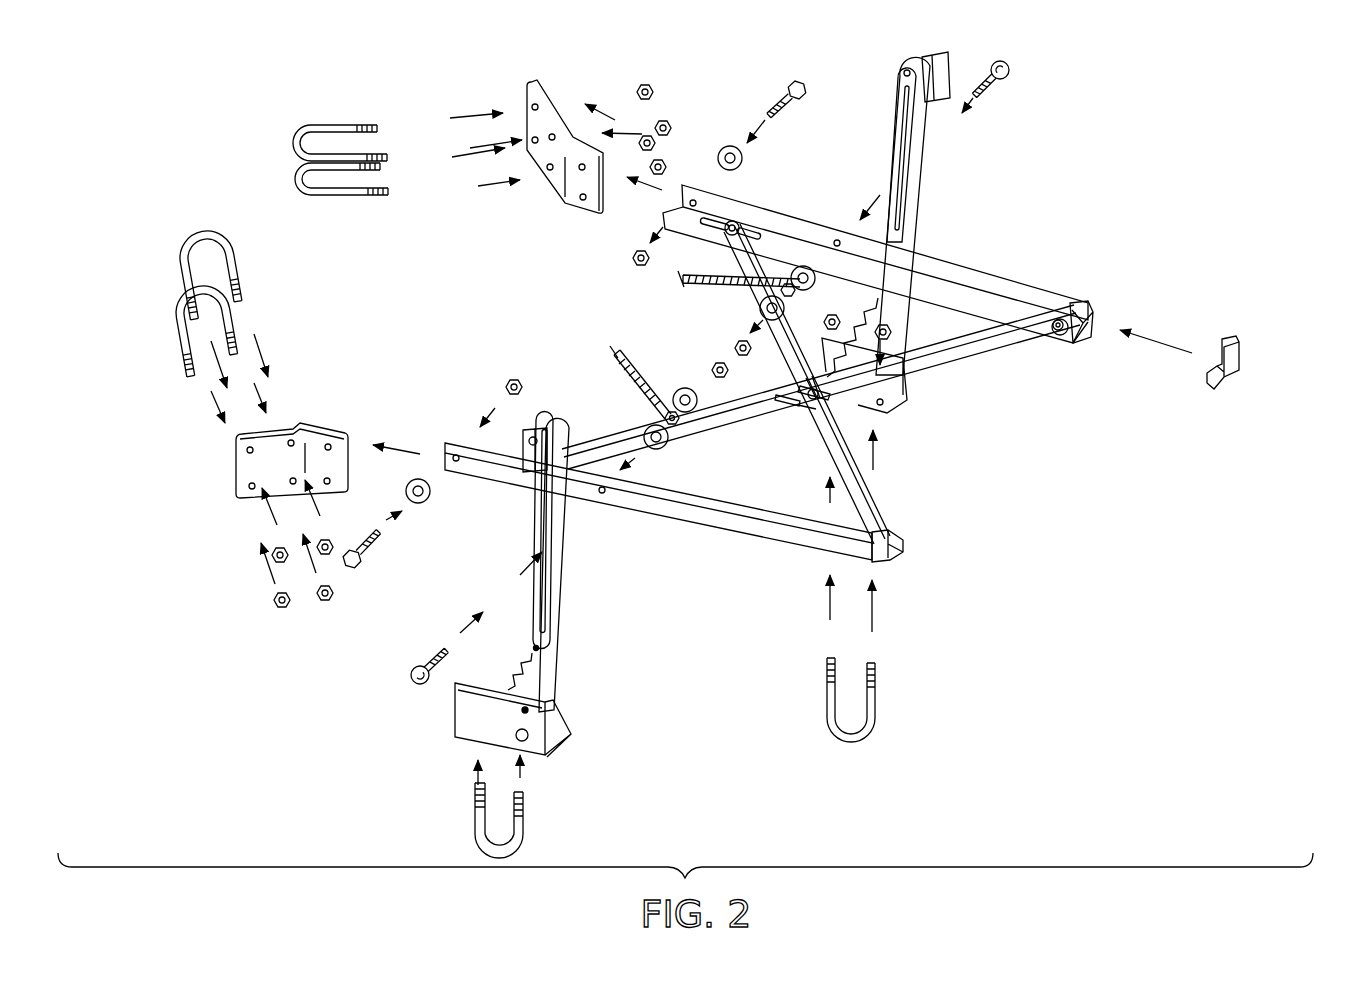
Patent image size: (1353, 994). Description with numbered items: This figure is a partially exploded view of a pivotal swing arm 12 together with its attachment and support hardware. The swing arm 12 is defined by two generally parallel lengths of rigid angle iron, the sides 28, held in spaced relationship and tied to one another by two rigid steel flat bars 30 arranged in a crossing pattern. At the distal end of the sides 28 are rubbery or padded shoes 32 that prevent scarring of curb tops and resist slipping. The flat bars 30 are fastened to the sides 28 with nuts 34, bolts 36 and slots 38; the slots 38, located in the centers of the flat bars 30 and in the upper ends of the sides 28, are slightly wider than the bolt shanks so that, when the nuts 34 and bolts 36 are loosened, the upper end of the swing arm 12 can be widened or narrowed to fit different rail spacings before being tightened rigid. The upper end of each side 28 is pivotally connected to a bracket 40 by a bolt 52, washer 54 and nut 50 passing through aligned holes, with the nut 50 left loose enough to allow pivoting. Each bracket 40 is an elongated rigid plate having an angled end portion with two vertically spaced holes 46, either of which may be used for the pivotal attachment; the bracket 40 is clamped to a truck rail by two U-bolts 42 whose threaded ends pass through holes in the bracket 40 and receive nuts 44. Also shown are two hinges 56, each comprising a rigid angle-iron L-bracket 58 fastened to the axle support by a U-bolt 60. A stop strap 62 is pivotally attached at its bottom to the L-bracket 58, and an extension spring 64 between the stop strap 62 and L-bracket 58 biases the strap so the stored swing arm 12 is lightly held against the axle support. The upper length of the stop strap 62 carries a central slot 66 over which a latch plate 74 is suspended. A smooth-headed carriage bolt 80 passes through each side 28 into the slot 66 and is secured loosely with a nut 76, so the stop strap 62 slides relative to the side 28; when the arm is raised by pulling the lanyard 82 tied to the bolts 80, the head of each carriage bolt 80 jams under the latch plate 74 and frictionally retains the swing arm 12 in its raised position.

The swing arm 12 is at (980, 262).
The sides 28 is at (1040, 287).
The flat bars 30 is at (1027, 350).
The shoes 32 is at (1237, 355).
The nuts 34 is at (1083, 302).
The bolts 36 is at (1066, 327).
The slots 38 is at (740, 233).
The brackets 40 is at (530, 90).
The U-bolts 42 is at (175, 292).
The nuts 44 is at (665, 119).
The holes 46 is at (583, 168).
The nuts 50 is at (630, 262).
The bolts 52 is at (790, 96).
The washers 54 is at (723, 152).
The hinges 56 is at (567, 698).
The L-bracket 58 is at (560, 743).
The U-bolt 60 is at (876, 707).
The stop strap 62 is at (922, 200).
The extension spring 64 is at (857, 333).
The slot 66 is at (910, 112).
The latch plate 74 is at (940, 103).
The nuts 76 is at (746, 356).
The carriage bolt 80 is at (1003, 79).
The lanyard 82 is at (619, 353).